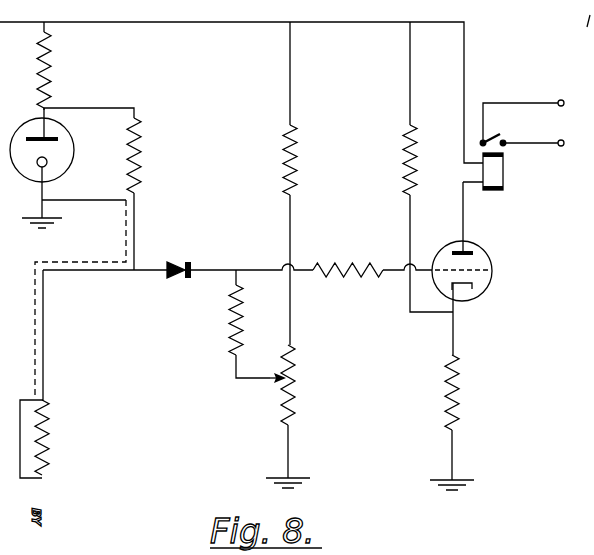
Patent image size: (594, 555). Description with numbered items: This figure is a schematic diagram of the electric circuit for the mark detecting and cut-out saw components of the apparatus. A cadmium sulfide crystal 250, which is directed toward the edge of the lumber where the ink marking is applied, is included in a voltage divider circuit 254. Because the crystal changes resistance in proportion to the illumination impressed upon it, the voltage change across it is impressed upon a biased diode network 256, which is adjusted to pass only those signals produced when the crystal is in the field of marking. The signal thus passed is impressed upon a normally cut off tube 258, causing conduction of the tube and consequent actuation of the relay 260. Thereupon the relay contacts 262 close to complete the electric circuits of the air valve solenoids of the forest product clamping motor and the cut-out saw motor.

The cadmium sulfide crystal 250 is at (48, 455).
The voltage divider circuit 254 is at (183, 131).
The biased diode network 256 is at (218, 246).
The normally cut off tube 258 is at (484, 290).
The relay 260 is at (493, 191).
The relay contacts 262 is at (492, 138).